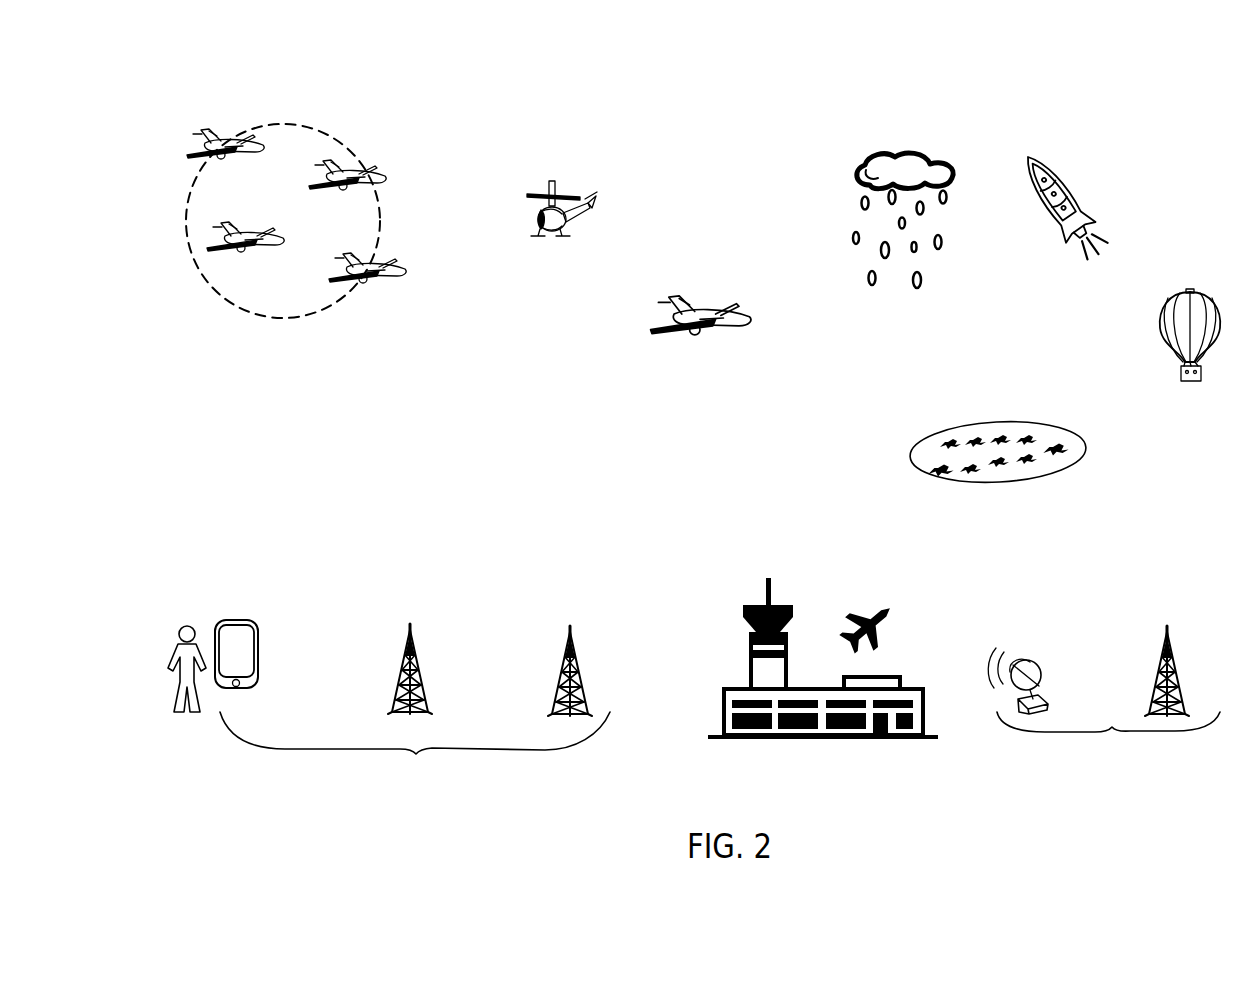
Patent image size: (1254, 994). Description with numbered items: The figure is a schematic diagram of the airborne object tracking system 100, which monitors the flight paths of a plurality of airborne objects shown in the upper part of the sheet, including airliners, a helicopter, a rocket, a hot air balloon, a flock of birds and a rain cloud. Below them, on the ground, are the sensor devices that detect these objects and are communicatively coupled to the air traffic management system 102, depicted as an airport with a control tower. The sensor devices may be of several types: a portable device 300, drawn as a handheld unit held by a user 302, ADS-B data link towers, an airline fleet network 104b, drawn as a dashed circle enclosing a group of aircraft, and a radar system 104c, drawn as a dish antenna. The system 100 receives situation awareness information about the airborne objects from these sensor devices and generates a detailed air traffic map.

The airborne object tracking system 100 is at (1010, 101).
The air traffic management (ATM) system 102 is at (825, 739).
The airline fleet network 104b is at (329, 132).
The radar system 104c is at (1043, 665).
The portable device 300 is at (259, 650).
The user 302 is at (189, 601).